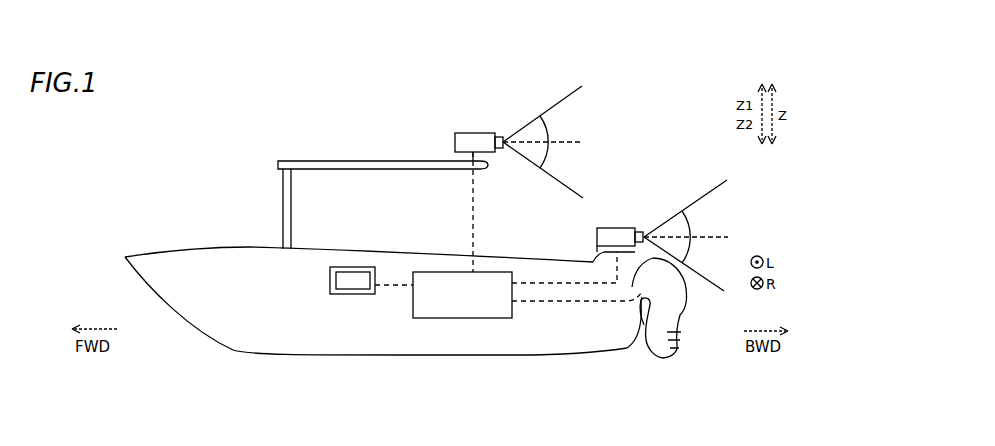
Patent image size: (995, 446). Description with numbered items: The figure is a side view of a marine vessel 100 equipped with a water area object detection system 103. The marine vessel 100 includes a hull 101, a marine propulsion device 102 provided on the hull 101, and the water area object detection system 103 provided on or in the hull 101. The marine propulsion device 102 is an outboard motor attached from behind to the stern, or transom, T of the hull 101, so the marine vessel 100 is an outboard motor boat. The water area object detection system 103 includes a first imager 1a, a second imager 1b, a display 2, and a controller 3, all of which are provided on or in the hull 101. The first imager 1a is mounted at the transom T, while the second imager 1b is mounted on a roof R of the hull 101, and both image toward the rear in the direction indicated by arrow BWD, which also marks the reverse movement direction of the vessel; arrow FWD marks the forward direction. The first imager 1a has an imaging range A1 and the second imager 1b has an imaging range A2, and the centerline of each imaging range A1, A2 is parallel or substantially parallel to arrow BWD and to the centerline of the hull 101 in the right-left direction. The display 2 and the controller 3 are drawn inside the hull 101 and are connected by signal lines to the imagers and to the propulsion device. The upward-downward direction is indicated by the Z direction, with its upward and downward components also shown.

The marine vessel 100 is at (253, 134).
The hull 101 is at (152, 258).
The marine propulsion device 102 is at (684, 299).
The water area object detection system 103 is at (443, 332).
The first imager 1a is at (612, 228).
The second imager 1b is at (466, 133).
The display 2 is at (340, 266).
The controller 3 is at (430, 271).
The roof R is at (442, 163).
The stern (transom) T is at (648, 235).
The imaging range A1 is at (685, 235).
The imaging range A2 is at (543, 142).